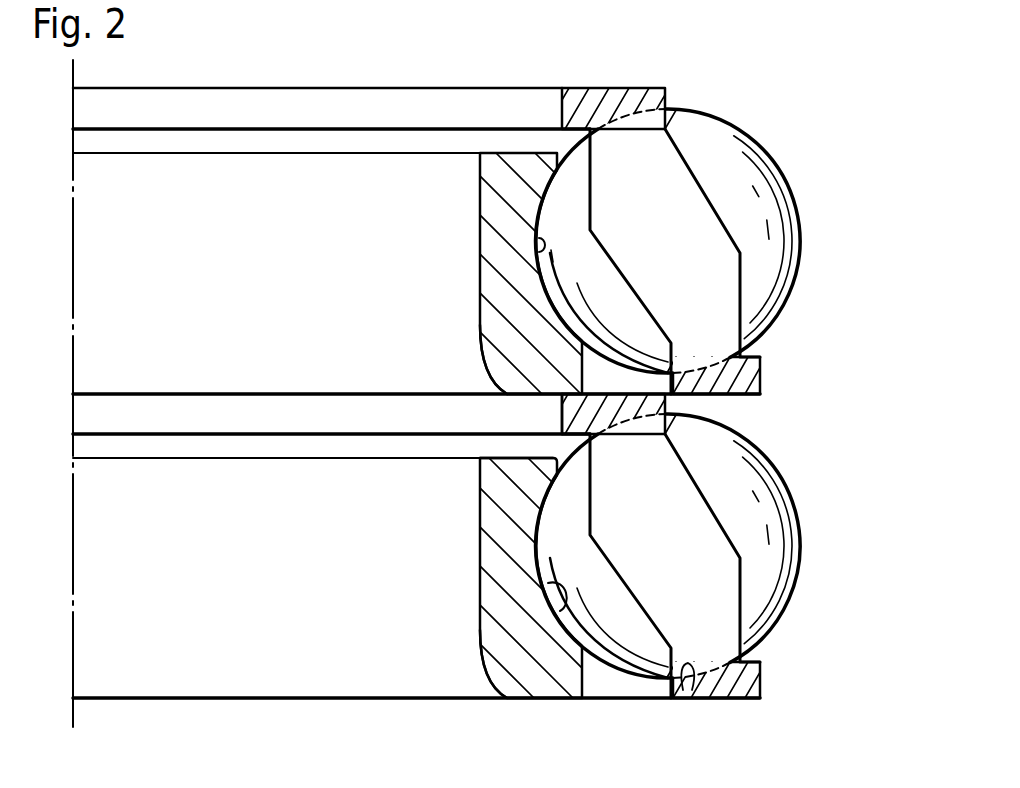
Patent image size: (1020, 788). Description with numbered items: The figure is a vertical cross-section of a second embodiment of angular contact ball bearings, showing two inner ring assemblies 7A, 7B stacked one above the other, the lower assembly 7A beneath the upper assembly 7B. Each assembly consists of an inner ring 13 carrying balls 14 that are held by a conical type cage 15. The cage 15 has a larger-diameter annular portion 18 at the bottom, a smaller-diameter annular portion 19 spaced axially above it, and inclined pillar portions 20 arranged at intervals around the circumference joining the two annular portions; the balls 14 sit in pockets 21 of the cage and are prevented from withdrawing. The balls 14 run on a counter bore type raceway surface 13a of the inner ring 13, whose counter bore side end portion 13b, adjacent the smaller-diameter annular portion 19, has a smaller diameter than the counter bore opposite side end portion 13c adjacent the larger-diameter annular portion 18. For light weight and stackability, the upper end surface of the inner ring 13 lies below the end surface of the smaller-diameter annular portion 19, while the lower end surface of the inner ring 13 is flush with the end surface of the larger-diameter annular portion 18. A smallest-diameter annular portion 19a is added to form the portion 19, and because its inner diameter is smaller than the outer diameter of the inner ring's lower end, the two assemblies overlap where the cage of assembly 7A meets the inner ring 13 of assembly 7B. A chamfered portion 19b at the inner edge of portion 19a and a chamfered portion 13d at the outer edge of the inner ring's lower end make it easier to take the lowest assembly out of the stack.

The inner ring assembly 7A is at (810, 563).
The inner ring assembly 7B is at (818, 228).
The inner ring 13 is at (480, 202).
The raceway surface 13a is at (537, 254).
The counter bore side end portion 13b is at (520, 462).
The counter bore opposite side end portion 13c is at (541, 680).
The chamfered portion 13d is at (480, 322).
The ball 14 is at (720, 142).
The conical type cage 15 is at (737, 287).
The larger-diameter annular portion 18 is at (762, 372).
The smaller-diameter annular portion 19 is at (618, 88).
The smallest-diameter annular portion 19a is at (560, 421).
The chamfered portion 19b is at (560, 401).
The inclined pillar portion 20 is at (717, 235).
The pocket 21 is at (684, 688).